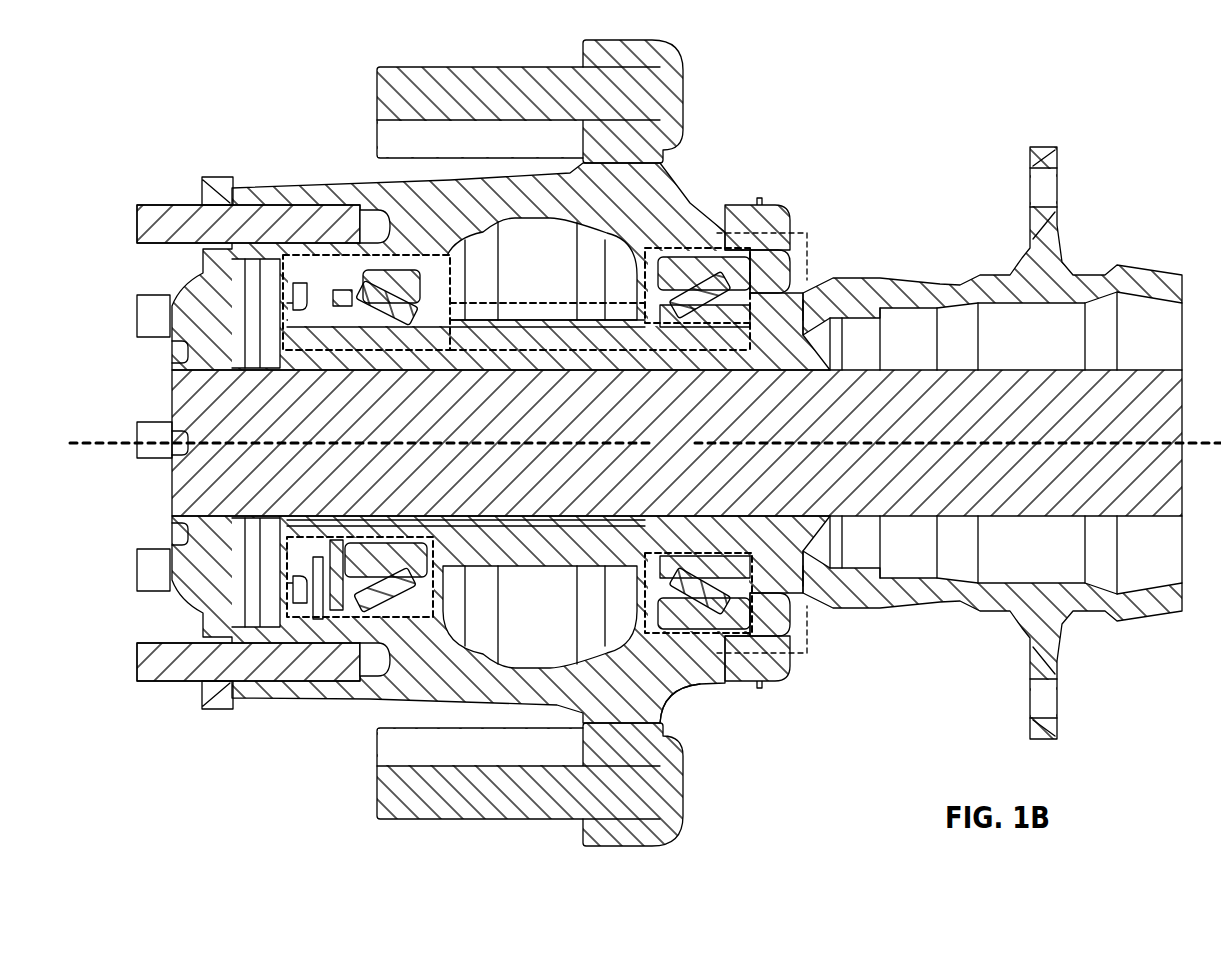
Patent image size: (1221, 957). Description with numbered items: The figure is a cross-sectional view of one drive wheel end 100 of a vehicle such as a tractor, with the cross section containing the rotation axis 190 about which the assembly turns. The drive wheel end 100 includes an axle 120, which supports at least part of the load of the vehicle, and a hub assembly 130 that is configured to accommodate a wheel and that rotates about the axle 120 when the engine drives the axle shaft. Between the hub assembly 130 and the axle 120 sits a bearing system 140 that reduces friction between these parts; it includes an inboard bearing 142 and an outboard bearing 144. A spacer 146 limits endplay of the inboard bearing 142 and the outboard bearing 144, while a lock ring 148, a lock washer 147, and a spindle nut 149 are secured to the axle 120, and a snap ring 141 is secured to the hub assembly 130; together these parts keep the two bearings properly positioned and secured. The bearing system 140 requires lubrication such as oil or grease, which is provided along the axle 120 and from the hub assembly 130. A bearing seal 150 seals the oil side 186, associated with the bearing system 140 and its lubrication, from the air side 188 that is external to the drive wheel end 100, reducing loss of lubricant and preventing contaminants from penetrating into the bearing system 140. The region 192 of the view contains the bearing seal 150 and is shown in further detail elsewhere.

The drive wheel end 100 is at (645, 466).
The axle 120 is at (915, 295).
The hub assembly 130 is at (716, 76).
The bearing system 140 is at (357, 190).
The snap ring 141 is at (307, 617).
The inboard bearing 142 is at (688, 636).
The outboard bearing 144 is at (452, 612).
The spacer 146 is at (540, 568).
The lock washer 147 is at (373, 600).
The lock ring 148 is at (292, 580).
The spindle nut 149 is at (290, 548).
The bearing seal 150 is at (785, 262).
The oil side 186 is at (728, 250).
The air side 188 is at (877, 249).
The rotation axis 190 is at (645, 444).
The region 192 is at (812, 262).